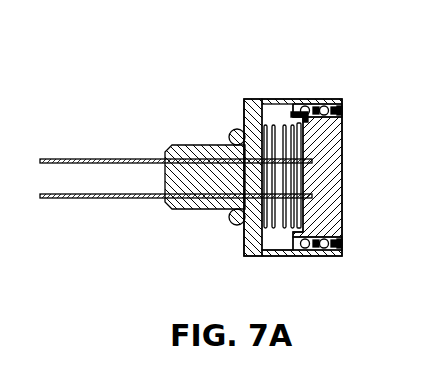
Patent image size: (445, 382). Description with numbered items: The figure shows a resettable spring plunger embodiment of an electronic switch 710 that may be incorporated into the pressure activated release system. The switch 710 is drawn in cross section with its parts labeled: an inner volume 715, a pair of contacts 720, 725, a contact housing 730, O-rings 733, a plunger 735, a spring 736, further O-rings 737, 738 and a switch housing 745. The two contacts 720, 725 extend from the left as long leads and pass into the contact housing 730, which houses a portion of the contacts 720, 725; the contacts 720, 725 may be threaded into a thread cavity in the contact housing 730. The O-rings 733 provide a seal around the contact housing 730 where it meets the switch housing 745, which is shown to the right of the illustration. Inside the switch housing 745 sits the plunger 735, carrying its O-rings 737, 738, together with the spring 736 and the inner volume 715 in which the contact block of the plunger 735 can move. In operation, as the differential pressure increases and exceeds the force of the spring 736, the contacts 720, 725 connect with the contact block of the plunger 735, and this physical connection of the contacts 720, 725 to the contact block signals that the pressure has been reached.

The electronic switch 710 is at (148, 86).
The inner volume 715 is at (273, 117).
The contact 720 is at (110, 158).
The contact 725 is at (100, 199).
The contact housing 730 is at (212, 144).
The O-rings 733 is at (233, 227).
The plunger 735 is at (343, 178).
The spring 736 is at (275, 233).
The O-rings 737 is at (340, 111).
The O-rings 738 is at (311, 105).
The switch housing 745 is at (296, 99).